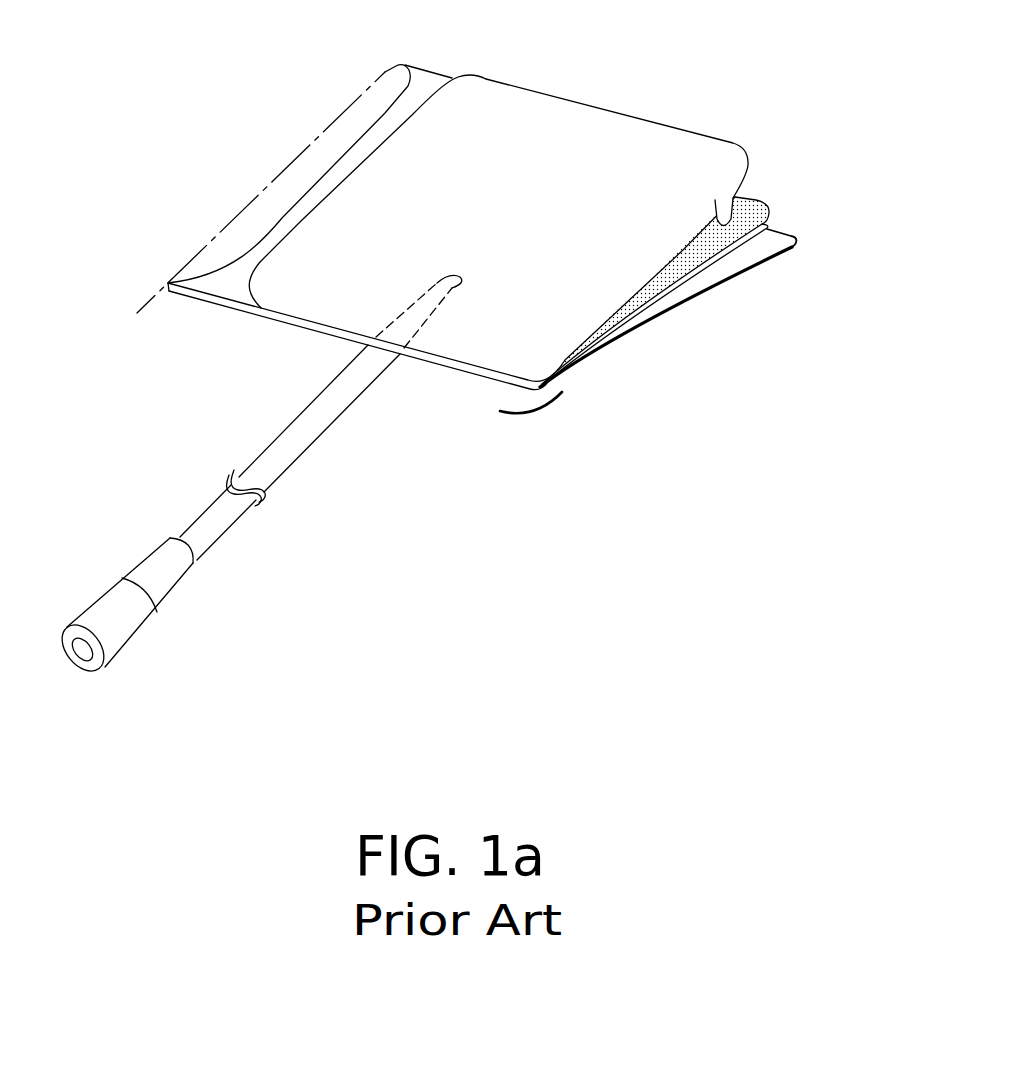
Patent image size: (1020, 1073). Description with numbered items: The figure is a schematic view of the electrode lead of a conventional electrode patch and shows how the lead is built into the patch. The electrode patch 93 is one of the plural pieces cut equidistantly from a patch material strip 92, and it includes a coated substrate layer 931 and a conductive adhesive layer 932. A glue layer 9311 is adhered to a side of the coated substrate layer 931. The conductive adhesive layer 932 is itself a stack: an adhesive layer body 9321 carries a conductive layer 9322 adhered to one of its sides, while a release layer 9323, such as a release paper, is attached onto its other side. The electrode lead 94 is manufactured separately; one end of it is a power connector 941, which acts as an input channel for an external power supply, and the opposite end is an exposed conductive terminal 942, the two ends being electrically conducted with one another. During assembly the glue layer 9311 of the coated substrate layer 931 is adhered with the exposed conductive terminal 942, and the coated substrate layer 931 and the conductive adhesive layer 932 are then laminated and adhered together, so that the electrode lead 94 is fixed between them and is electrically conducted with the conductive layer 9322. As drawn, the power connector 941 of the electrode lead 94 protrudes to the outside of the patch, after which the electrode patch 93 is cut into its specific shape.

The patch material strip 92 is at (471, 384).
The electrode patch 93 is at (512, 266).
The coated substrate layer 931 is at (525, 112).
The glue layer 9311 is at (727, 200).
The conductive adhesive layer 932 is at (714, 266).
The adhesive layer body 9321 is at (768, 227).
The conductive layer 9322 is at (753, 208).
The release layer 9323 is at (747, 260).
The electrode lead 94 is at (258, 455).
The power connector 941 is at (138, 628).
The exposed conductive terminal 942 is at (427, 288).